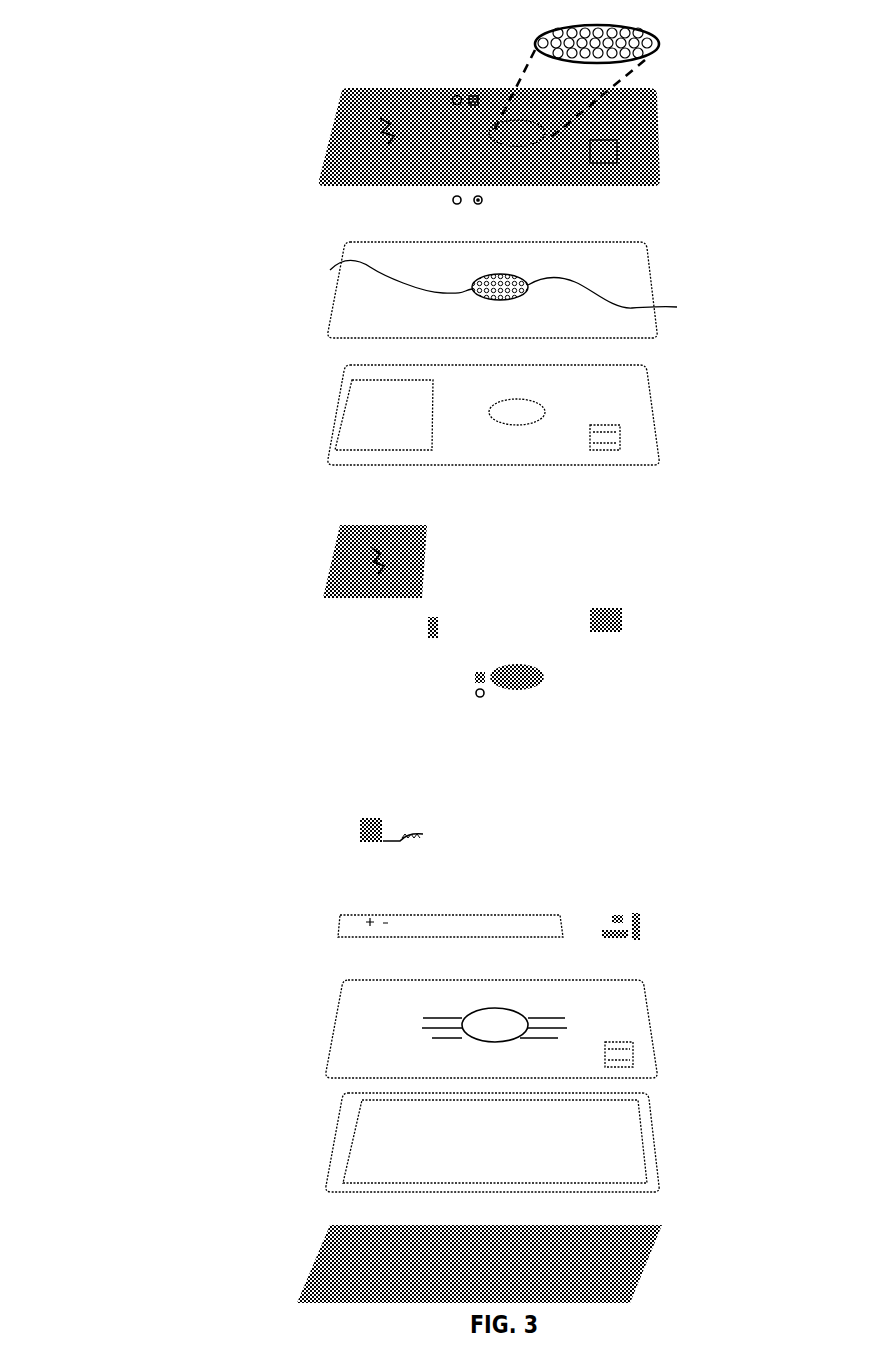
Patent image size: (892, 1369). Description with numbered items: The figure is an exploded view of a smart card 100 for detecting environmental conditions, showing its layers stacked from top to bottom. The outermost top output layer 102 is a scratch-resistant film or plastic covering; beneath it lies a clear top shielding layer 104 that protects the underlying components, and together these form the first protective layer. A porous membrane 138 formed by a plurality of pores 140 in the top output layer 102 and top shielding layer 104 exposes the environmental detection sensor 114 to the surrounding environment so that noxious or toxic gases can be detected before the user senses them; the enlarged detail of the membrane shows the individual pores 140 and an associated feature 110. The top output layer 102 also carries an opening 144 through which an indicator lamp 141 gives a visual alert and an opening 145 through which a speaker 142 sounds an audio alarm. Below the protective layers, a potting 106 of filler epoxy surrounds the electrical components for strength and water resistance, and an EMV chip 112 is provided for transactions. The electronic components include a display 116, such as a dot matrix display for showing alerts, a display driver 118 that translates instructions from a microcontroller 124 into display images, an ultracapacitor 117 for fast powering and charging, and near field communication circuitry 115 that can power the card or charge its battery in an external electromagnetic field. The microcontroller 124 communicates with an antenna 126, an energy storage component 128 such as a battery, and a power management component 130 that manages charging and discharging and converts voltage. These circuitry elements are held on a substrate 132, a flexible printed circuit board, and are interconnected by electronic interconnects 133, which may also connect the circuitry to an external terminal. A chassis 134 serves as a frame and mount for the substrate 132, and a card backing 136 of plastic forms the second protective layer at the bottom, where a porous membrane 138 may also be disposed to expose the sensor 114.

The smart card 100 is at (272, 66).
The top output layer 102 is at (656, 128).
The top shielding layer 104 is at (656, 260).
The potting 106 is at (662, 412).
The apertures 110 is at (565, 25).
The EMV chip 112 is at (623, 153).
The environmental detection sensor 114 is at (551, 677).
The near field communication circuitry 115 is at (475, 698).
The display 116 is at (324, 557).
The ultracapacitor 117 is at (471, 676).
The display driver 118 is at (424, 628).
The microcontroller 124 is at (357, 831).
The antenna 126 is at (436, 836).
The energy storage component 128 is at (336, 920).
The power management component 130 is at (646, 925).
The substrate 132 is at (324, 1059).
The electronic interconnects 133 is at (553, 1018).
The chassis 134 is at (663, 1139).
The card backing 136 is at (653, 1240).
The porous membrane 138 is at (607, 25).
The pores 140 is at (541, 40).
The indicator lamp 141 is at (452, 200).
The speaker 142 is at (484, 200).
The opening 144 is at (455, 96).
The opening 145 is at (481, 94).